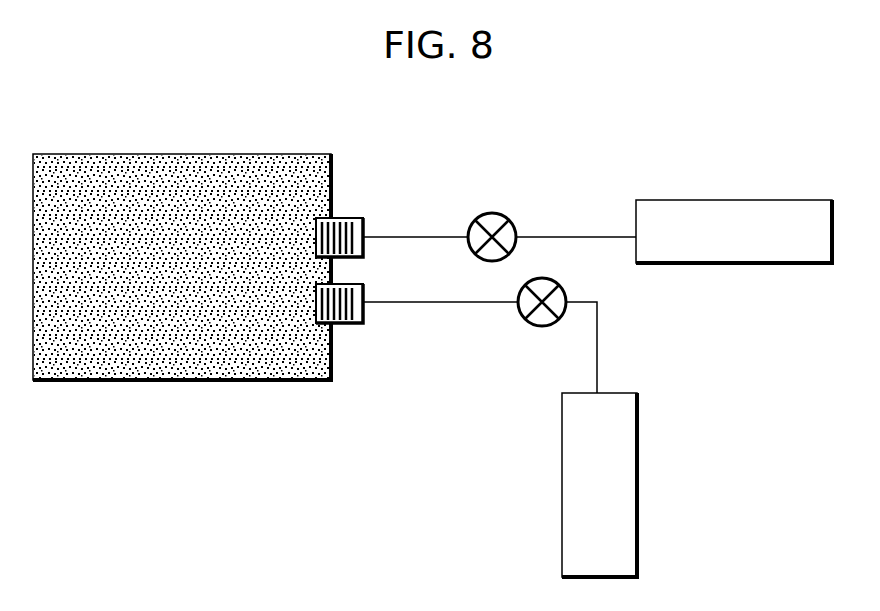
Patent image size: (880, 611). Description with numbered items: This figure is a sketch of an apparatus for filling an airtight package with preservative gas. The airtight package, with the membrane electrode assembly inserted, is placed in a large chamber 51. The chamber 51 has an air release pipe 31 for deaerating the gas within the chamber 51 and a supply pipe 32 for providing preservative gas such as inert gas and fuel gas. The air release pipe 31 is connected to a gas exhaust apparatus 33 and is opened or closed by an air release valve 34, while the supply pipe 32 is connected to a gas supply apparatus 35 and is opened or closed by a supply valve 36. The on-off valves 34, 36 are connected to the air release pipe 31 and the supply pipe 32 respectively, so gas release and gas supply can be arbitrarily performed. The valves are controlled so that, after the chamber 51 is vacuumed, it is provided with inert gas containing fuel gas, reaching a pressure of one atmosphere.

The chamber 51 is at (161, 187).
The air release pipe 31 is at (417, 237).
The supply pipe 32 is at (430, 303).
The gas exhaust apparatus 33 is at (719, 213).
The air release valve 34 is at (488, 212).
The gas supply apparatus 35 is at (622, 497).
The supply valve 36 is at (532, 327).